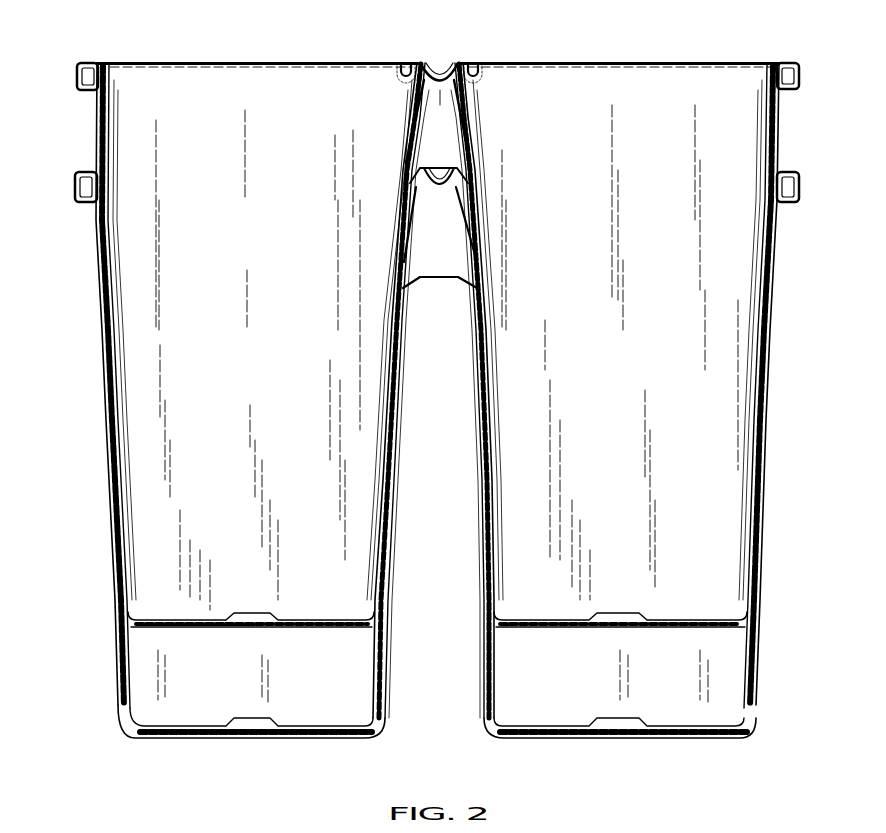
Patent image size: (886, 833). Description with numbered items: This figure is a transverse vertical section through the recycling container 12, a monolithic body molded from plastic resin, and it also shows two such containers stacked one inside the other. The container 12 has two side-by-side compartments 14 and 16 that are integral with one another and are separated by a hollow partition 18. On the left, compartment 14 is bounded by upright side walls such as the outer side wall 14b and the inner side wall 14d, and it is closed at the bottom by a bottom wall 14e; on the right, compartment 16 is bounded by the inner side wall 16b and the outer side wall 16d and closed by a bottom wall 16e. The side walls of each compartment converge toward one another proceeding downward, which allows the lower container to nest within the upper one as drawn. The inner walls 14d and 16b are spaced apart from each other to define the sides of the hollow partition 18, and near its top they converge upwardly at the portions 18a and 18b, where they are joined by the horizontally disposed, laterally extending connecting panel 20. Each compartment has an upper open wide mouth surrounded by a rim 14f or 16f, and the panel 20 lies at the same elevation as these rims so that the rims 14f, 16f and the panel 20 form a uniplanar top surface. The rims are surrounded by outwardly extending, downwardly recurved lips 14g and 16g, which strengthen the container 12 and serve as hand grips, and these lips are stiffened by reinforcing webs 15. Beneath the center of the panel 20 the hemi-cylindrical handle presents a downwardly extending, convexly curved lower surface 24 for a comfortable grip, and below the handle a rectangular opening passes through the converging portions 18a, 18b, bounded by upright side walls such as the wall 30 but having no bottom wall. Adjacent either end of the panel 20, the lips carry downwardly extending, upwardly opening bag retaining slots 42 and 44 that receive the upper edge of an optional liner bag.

The recycling container 12 is at (774, 145).
The compartment 14 is at (220, 376).
The side wall 14b is at (110, 258).
The side wall 14d is at (397, 233).
The bottom wall 14e is at (190, 628).
The rim 14f is at (254, 63).
The lip 14g is at (84, 68).
The reinforcing web 15 is at (86, 92).
The compartment 16 is at (650, 376).
The side wall 16b is at (483, 233).
The side wall 16d is at (766, 262).
The bottom wall 16e is at (568, 628).
The rim 16f is at (613, 63).
The lip 16g is at (797, 70).
The hollow partition 18 is at (441, 370).
The converging wall portion 18a is at (411, 123).
The converging wall portion 18b is at (480, 123).
The connecting panel 20 is at (434, 63).
The convexly curved lower surface 24 is at (438, 88).
The upright side wall of opening 30 is at (410, 134).
The bag retaining slot 42 is at (406, 62).
The bag retaining slot 44 is at (474, 62).